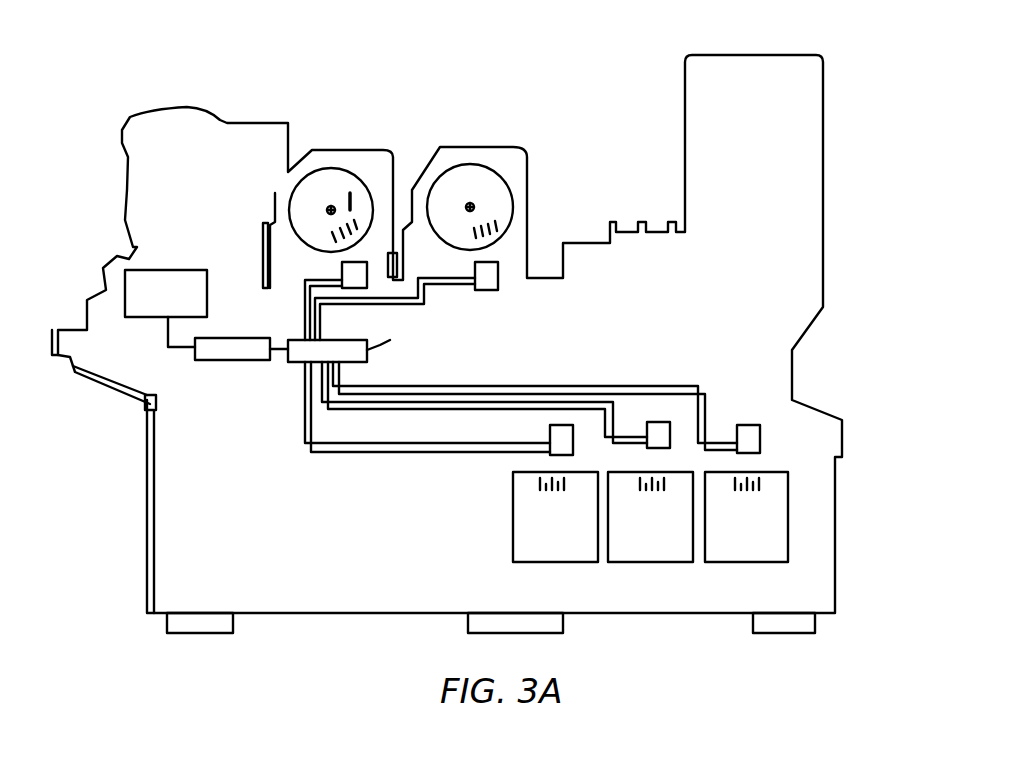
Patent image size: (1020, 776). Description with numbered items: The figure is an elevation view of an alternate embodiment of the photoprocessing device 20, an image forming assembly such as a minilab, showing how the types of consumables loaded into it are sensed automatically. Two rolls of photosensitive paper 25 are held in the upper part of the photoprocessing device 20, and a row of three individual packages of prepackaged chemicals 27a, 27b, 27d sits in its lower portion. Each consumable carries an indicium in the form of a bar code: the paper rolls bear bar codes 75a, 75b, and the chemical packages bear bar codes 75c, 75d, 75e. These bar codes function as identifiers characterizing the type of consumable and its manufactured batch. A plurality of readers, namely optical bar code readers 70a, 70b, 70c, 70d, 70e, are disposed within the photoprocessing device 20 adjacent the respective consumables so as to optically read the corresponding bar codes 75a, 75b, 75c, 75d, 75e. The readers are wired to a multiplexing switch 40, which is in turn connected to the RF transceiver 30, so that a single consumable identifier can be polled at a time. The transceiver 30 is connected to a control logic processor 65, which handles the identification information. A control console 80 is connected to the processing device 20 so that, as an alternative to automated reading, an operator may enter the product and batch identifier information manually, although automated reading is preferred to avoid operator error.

The photoprocessing device 20 is at (776, 58).
The photosensitive paper 25 is at (330, 167).
The bar code 75a is at (351, 196).
The bar code 75b is at (506, 220).
The bar code 75c is at (551, 506).
The bar code 75d is at (651, 506).
The bar code 75e is at (746, 506).
The optical bar code reader 70a is at (342, 268).
The optical bar code reader 70b is at (500, 283).
The optical bar code reader 70c is at (552, 433).
The optical bar code reader 70d is at (658, 422).
The optical bar code reader 70e is at (760, 441).
The control logic processor 65 is at (130, 258).
The control console 80 is at (92, 297).
The RF transceiver 30 is at (222, 338).
The multiplexing switch 40 is at (292, 340).
The prepackaged chemicals 27a is at (544, 539).
The prepackaged chemicals 27b is at (642, 539).
The paper tray d 27d is at (745, 539).